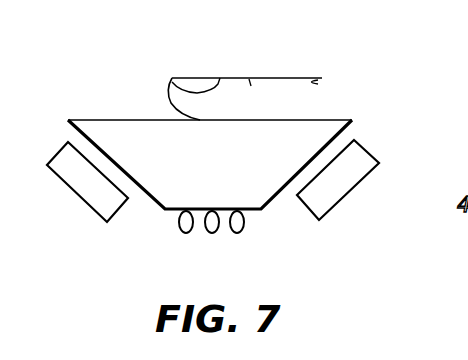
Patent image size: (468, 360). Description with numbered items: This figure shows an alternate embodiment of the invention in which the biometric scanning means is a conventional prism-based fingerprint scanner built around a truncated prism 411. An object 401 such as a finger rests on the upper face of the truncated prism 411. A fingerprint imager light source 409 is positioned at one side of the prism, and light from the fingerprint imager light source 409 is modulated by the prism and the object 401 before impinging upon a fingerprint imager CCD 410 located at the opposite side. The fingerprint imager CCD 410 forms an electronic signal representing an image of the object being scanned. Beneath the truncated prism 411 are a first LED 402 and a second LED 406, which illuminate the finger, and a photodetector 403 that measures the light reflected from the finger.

The object 401 is at (234, 78).
The truncated prism 411 is at (100, 120).
The fingerprint imager light source 409 is at (65, 184).
The fingerprint imager CCD 410 is at (356, 182).
The first LED 402 is at (181, 228).
The second LED 406 is at (212, 234).
The photodetector 403 is at (239, 233).